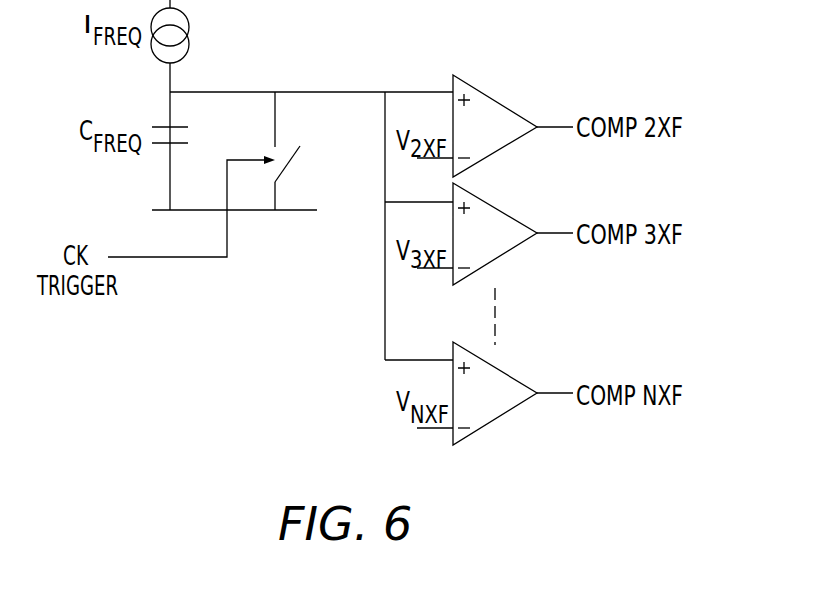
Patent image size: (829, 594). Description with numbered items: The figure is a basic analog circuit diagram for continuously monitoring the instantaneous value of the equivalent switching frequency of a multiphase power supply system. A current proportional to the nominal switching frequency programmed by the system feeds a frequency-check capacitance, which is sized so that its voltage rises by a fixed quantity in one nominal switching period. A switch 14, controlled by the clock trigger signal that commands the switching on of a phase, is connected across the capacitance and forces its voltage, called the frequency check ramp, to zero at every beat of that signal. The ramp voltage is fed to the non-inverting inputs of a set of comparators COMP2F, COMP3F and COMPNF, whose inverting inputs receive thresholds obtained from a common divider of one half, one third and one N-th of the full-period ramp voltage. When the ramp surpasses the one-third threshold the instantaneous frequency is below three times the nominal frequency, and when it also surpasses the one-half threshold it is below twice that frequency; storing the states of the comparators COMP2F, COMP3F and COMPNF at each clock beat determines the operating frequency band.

The switch 14 is at (300, 165).
The comparator COMP2F is at (493, 98).
The comparator COMP3F is at (493, 208).
The comparator COMPNF is at (493, 368).